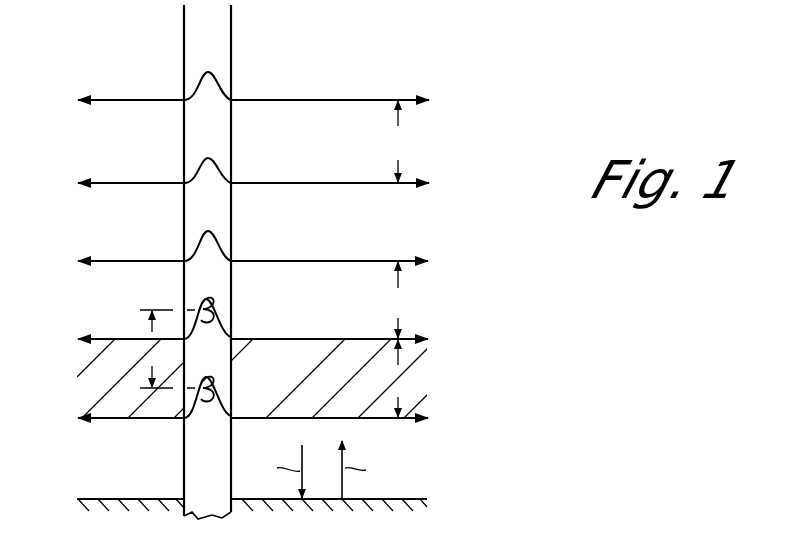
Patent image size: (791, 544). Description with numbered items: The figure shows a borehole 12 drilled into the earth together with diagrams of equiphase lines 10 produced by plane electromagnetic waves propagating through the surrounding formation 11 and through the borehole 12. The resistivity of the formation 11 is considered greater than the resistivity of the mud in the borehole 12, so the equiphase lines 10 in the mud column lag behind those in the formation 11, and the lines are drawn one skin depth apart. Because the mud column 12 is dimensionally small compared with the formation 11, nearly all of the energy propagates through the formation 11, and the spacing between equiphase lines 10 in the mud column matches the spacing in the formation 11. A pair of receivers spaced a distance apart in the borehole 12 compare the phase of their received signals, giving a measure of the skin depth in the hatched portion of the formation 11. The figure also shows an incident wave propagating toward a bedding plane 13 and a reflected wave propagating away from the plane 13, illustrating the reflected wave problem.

The equiphase lines 10 is at (368, 100).
The formation 11 is at (318, 63).
The borehole 12 is at (207, 262).
The bedding plane 13 is at (411, 499).